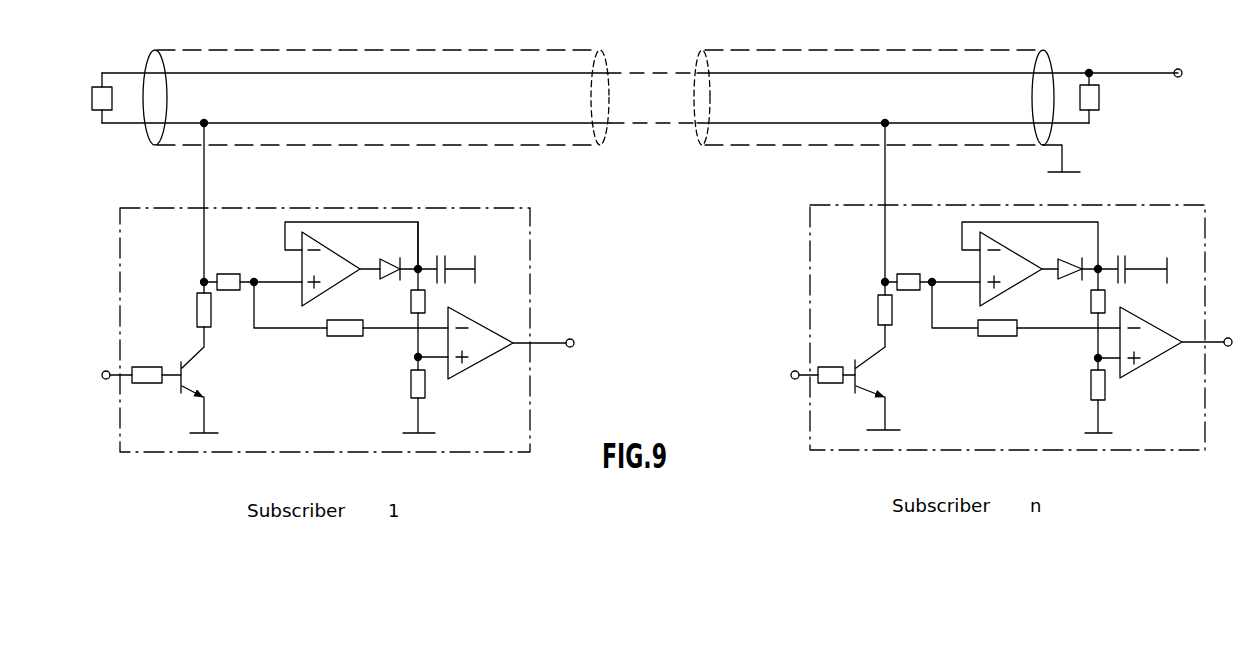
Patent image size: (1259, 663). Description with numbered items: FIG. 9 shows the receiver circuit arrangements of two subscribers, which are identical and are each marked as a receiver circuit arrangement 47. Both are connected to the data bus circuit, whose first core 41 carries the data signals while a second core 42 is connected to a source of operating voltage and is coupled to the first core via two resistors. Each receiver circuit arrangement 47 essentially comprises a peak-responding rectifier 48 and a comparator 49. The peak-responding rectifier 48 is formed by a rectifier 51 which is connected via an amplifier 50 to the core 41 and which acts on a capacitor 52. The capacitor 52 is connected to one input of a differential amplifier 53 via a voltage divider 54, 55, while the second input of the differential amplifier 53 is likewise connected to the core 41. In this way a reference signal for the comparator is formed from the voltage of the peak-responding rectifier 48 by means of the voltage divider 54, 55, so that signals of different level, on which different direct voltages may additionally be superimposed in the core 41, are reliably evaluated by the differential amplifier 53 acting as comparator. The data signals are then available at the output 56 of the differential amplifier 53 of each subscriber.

The core 41 is at (609, 122).
The second core 42 is at (603, 64).
The receiver circuit arrangement 47 is at (510, 404).
The peak-responding rectifier 48 is at (430, 250).
The comparator 49 is at (406, 345).
The amplifier 50 is at (325, 248).
The rectifier 51 is at (382, 262).
The capacitor 52 is at (446, 283).
The differential amplifier 53 is at (489, 326).
The voltage divider 54 is at (411, 297).
The voltage divider 55 is at (410, 386).
The output 56 is at (553, 340).